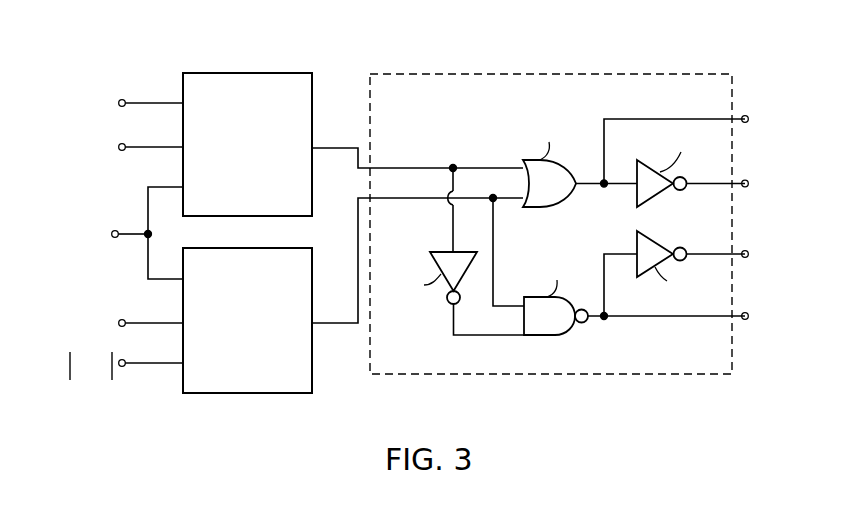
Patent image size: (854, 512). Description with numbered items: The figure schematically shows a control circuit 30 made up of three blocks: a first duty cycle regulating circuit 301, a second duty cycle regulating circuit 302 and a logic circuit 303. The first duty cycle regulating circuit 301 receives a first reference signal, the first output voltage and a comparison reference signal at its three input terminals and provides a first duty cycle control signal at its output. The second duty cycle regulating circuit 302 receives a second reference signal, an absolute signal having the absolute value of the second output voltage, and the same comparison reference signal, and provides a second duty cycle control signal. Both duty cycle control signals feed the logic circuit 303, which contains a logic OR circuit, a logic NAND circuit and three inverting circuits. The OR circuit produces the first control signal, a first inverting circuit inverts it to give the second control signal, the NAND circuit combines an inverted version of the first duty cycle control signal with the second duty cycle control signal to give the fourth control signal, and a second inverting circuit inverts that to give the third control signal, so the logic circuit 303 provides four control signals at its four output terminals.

The control circuit 30 is at (423, 30).
The first duty cycle regulating circuit 301 is at (247, 144).
The second duty cycle regulating circuit 302 is at (247, 320).
The logic circuit 303 is at (423, 107).